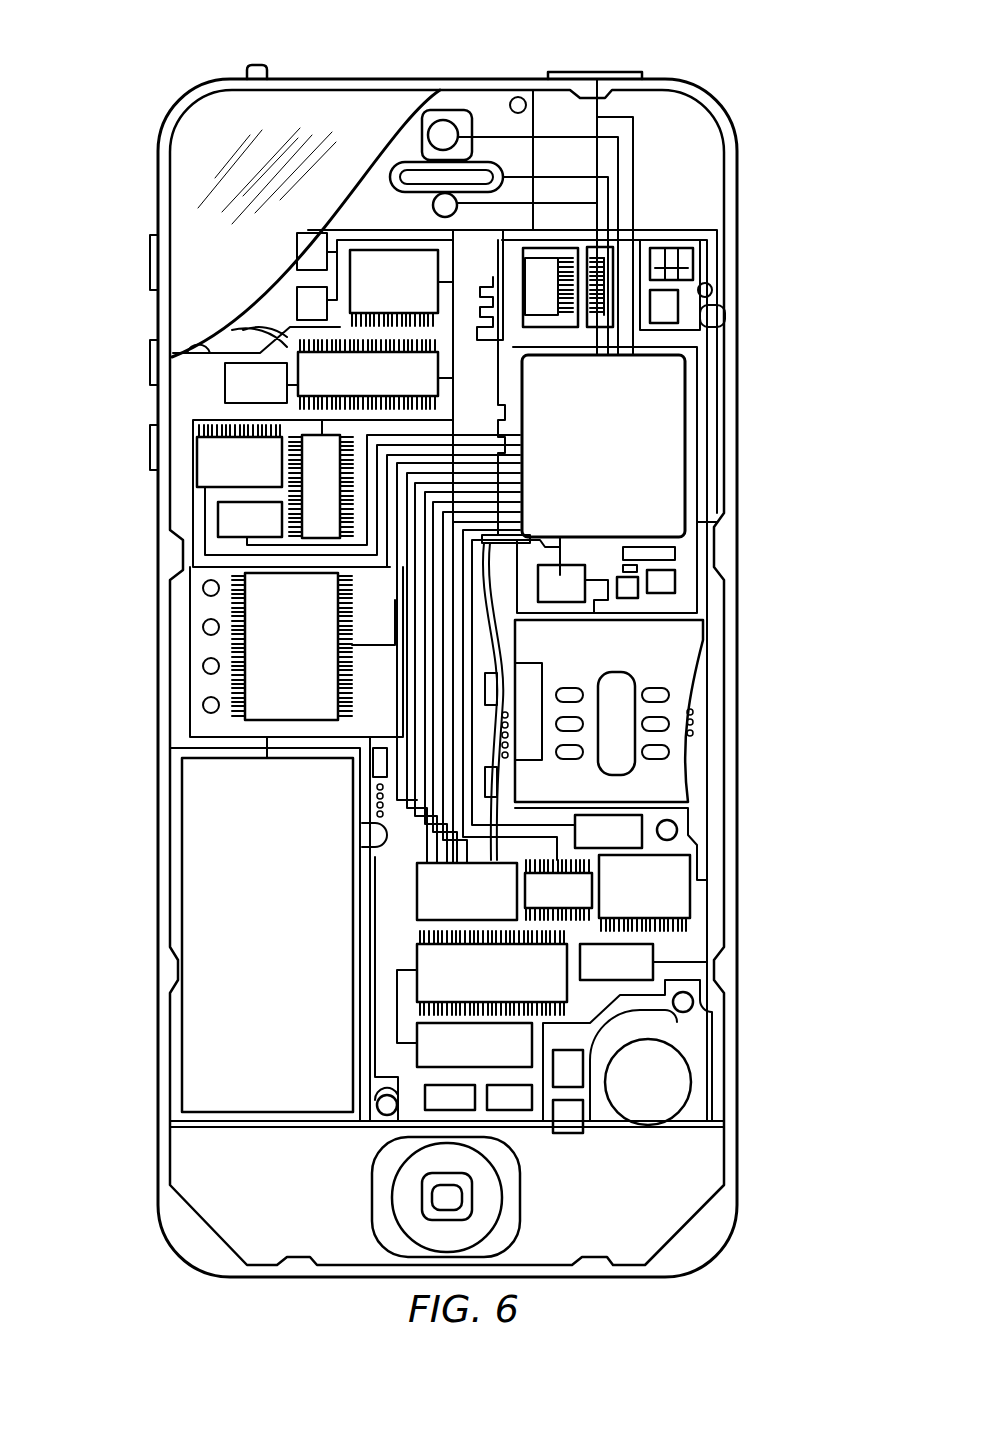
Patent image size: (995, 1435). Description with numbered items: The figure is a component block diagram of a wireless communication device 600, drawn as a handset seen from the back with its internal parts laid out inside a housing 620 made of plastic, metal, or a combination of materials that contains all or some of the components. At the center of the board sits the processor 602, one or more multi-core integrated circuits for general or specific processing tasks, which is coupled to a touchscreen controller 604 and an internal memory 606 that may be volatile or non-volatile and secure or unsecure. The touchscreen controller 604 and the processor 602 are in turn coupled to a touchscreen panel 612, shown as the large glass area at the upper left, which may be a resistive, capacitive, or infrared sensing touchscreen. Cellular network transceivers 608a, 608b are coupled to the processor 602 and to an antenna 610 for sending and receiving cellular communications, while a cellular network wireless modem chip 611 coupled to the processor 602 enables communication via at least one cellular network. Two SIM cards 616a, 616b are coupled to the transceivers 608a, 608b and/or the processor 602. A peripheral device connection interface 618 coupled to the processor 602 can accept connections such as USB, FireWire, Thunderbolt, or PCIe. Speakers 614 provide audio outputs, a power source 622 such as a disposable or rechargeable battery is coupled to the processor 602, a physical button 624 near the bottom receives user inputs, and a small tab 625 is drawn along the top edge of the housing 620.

The wireless communication device 600 is at (107, 62).
The processor 602 is at (622, 456).
The touchscreen controller 604 is at (414, 296).
The internal memory 606 is at (310, 649).
The cellular network transceiver 608a is at (625, 265).
The cellular network transceiver 608b is at (332, 465).
The antenna 610 is at (677, 313).
The cellular network wireless modem chip 611 is at (506, 982).
The touchscreen panel 612 is at (200, 178).
The speakers 614 is at (397, 167).
The SIM card 616a is at (633, 842).
The SIM card 616b is at (640, 972).
The peripheral device connection interface 618 is at (494, 1056).
The housing 620 is at (737, 1147).
The power source 622 is at (287, 946).
The physical button 624 is at (453, 1207).
The button 625 is at (596, 72).